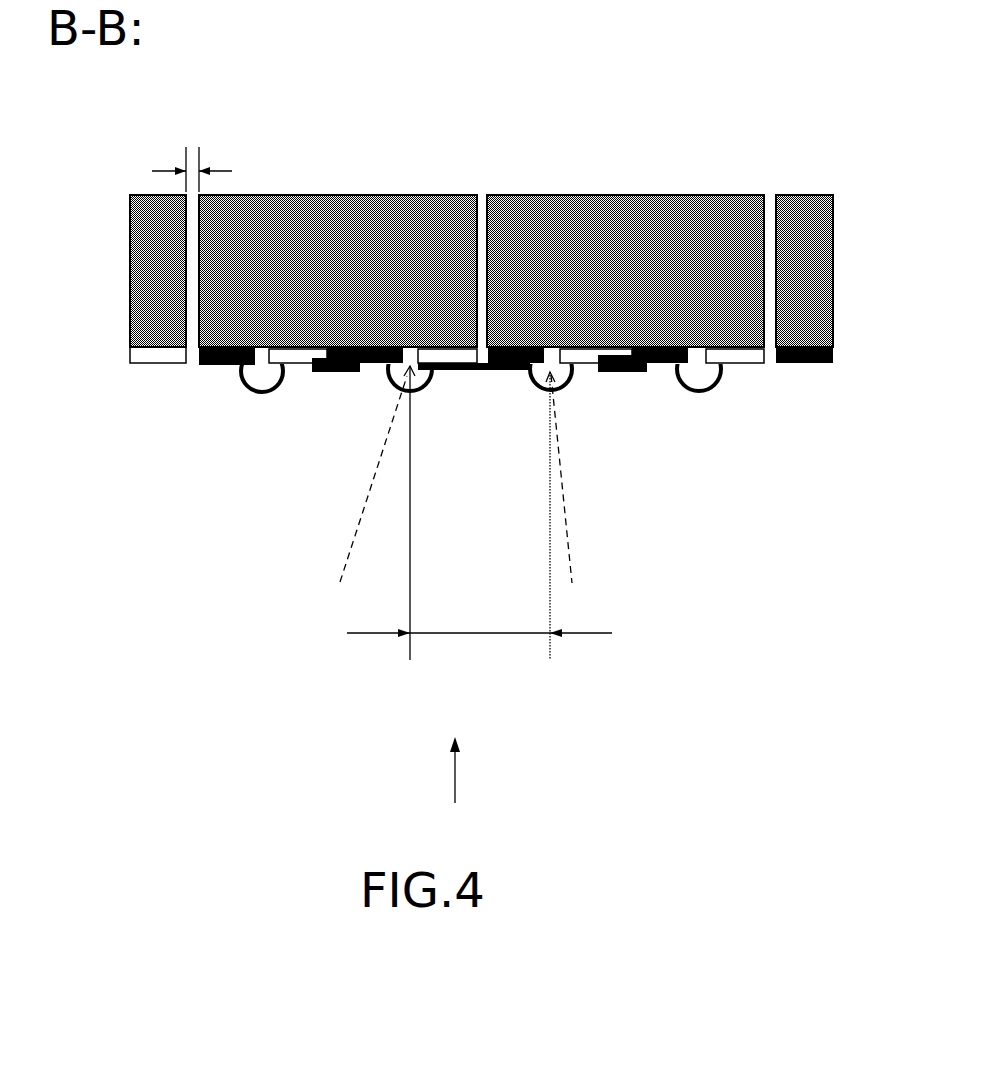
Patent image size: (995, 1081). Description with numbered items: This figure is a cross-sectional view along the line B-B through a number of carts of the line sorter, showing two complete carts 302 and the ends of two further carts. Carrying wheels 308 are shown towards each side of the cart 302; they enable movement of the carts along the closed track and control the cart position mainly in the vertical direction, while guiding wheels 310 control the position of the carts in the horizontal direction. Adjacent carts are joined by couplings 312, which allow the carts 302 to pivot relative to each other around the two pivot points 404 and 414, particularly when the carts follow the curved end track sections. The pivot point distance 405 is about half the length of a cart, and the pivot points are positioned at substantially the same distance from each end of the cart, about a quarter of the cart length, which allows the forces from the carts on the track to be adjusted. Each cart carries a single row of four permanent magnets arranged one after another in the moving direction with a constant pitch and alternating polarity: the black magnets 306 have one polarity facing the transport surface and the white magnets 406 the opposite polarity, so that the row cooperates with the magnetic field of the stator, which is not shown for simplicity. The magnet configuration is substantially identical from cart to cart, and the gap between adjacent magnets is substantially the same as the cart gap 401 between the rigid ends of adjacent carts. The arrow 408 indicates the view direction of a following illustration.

The cart 302 is at (325, 115).
The black magnet 306 is at (229, 373).
The carrying wheel 308 is at (275, 392).
The guiding wheel 310 is at (342, 372).
The coupling 312 is at (489, 414).
The cart gap 401 is at (190, 147).
The pivot point 404 is at (364, 513).
The pivot point distance 405 is at (378, 635).
The white magnet 406 is at (750, 370).
The arrow 408 is at (455, 765).
The pivot point 414 is at (575, 516).